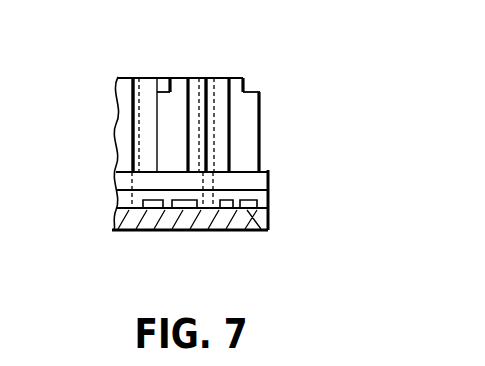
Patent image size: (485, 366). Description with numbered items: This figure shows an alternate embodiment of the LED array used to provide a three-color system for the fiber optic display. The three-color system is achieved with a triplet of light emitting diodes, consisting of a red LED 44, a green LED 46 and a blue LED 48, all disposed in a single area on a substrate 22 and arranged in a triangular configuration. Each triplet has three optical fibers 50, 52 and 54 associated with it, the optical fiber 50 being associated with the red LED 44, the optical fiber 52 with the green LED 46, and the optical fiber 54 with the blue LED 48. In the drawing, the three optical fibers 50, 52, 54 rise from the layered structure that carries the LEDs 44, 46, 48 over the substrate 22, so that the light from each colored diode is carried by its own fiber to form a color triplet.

The substrate 22 is at (115, 213).
The red LED 44 is at (127, 233).
The green LED 46 is at (165, 233).
The blue LED 48 is at (118, 178).
The optical fiber 50 is at (150, 77).
The optical fiber 52 is at (184, 100).
The optical fiber 54 is at (125, 98).